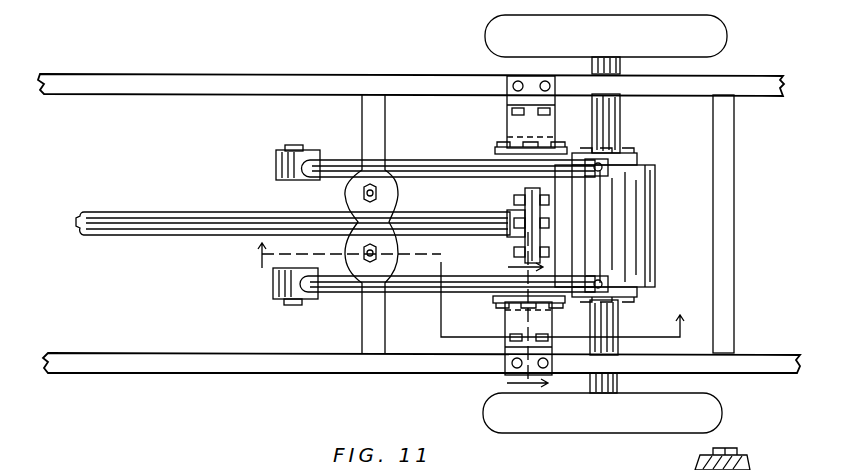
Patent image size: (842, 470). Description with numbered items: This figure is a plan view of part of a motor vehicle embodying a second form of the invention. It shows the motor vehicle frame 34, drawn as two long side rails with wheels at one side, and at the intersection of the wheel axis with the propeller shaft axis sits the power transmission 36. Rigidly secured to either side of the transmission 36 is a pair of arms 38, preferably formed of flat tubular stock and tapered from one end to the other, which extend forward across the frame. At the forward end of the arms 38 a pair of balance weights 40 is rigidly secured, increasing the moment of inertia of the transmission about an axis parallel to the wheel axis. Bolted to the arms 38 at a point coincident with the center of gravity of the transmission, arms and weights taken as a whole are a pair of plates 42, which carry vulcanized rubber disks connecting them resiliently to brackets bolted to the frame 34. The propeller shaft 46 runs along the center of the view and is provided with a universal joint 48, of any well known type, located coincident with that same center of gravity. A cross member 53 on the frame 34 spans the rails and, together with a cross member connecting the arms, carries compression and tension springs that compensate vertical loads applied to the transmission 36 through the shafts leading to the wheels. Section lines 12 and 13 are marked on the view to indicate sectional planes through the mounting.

The motor vehicle frame 34 is at (318, 74).
The cross member 53 is at (387, 125).
The arms 38 is at (410, 160).
The balance weights 40 is at (316, 150).
The propeller shaft 46 is at (214, 212).
The universal joint 48 is at (527, 190).
The power transmission 36 is at (641, 202).
The plates 42 is at (492, 153).
The section line 13- 13 is at (465, 289).
The section line 12- 12 is at (512, 314).